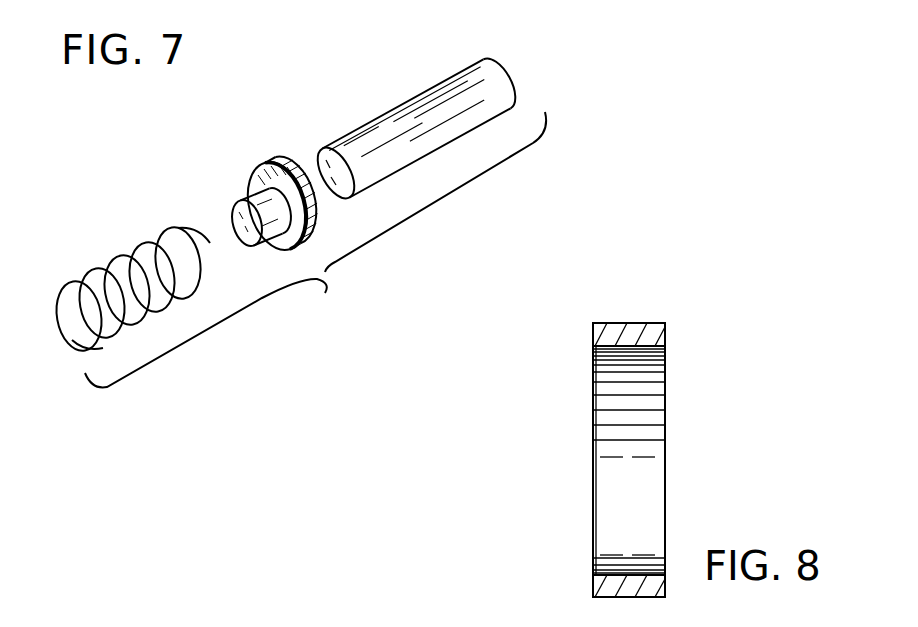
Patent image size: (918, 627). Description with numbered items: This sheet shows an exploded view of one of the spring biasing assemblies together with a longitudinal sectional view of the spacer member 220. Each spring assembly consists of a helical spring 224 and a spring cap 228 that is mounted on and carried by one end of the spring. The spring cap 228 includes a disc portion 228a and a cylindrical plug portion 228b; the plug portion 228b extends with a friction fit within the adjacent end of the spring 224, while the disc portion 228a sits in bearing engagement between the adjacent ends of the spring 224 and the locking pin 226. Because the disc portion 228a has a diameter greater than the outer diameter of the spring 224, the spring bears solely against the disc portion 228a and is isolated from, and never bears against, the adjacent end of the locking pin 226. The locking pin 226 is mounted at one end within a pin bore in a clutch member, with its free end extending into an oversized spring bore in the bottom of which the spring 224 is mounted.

In FIG. 8, the sleeve / tubular housing 220 is at (648, 500).
In FIG. 7, the helical spring 224 is at (145, 323).
In FIG. 7, the locking pin 226 is at (375, 123).
In FIG. 7, the spring cap 228 is at (312, 177).
In FIG. 7, the disc portion 228a is at (278, 158).
In FIG. 7, the cylindrical plug portion 228b is at (247, 195).